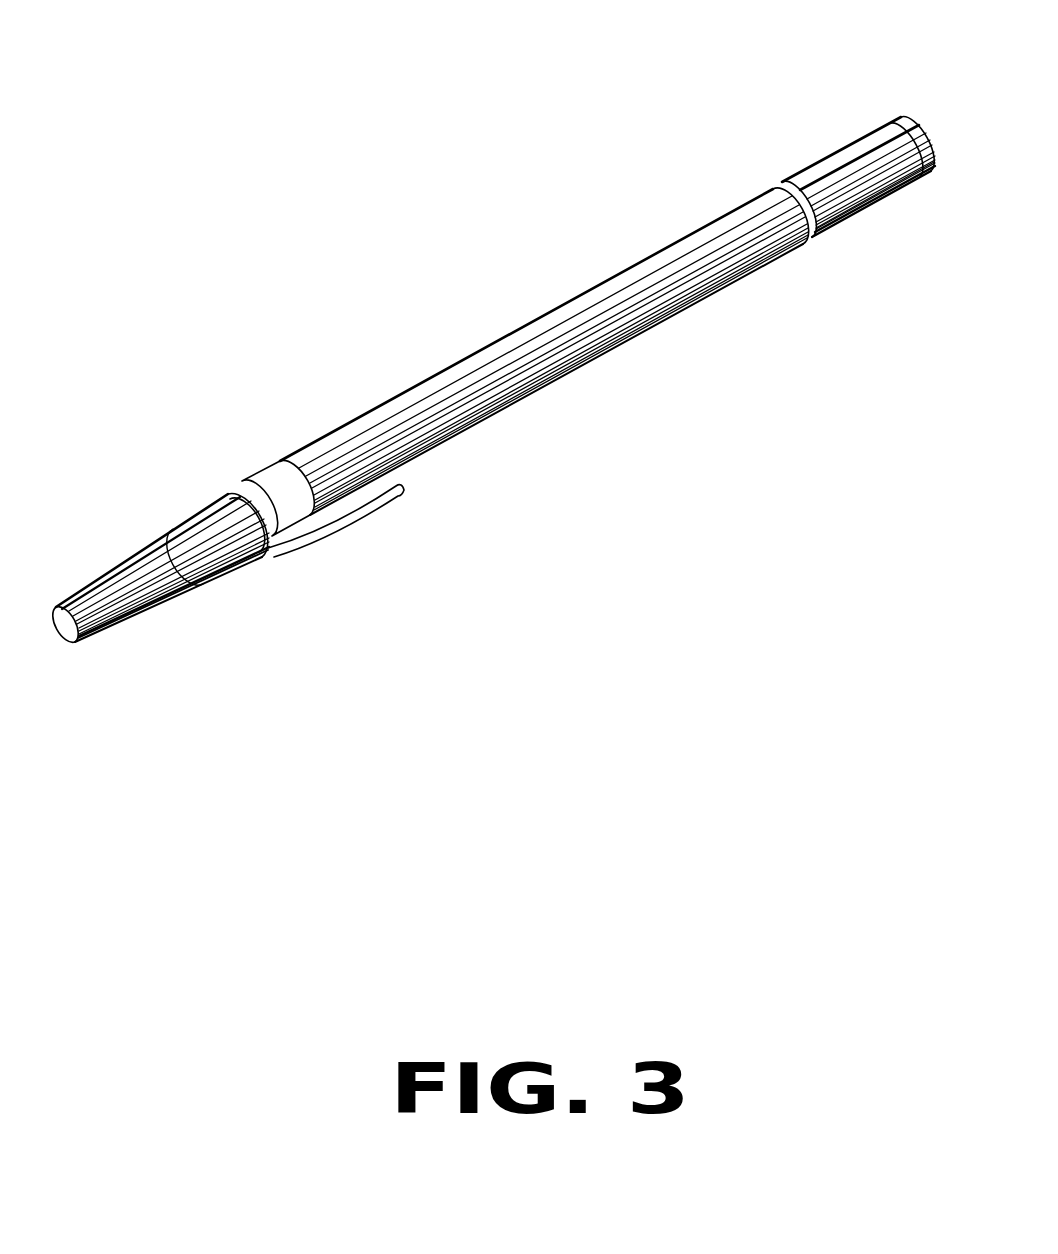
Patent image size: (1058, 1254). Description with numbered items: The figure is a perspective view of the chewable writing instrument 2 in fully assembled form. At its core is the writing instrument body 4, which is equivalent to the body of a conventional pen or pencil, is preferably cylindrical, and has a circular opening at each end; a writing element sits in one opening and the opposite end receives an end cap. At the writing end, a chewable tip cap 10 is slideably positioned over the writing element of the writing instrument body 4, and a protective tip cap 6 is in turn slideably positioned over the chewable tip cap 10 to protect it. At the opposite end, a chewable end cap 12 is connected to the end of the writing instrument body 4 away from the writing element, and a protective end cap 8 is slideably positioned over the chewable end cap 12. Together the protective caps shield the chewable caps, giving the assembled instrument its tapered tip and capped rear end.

The chewable writing instrument 2 is at (240, 150).
The writing instrument body 4 is at (523, 320).
The protective tip cap 6 is at (146, 538).
The protective end cap 8 is at (822, 152).
The chewable tip cap 10 is at (178, 585).
The chewable end cap 12 is at (866, 200).